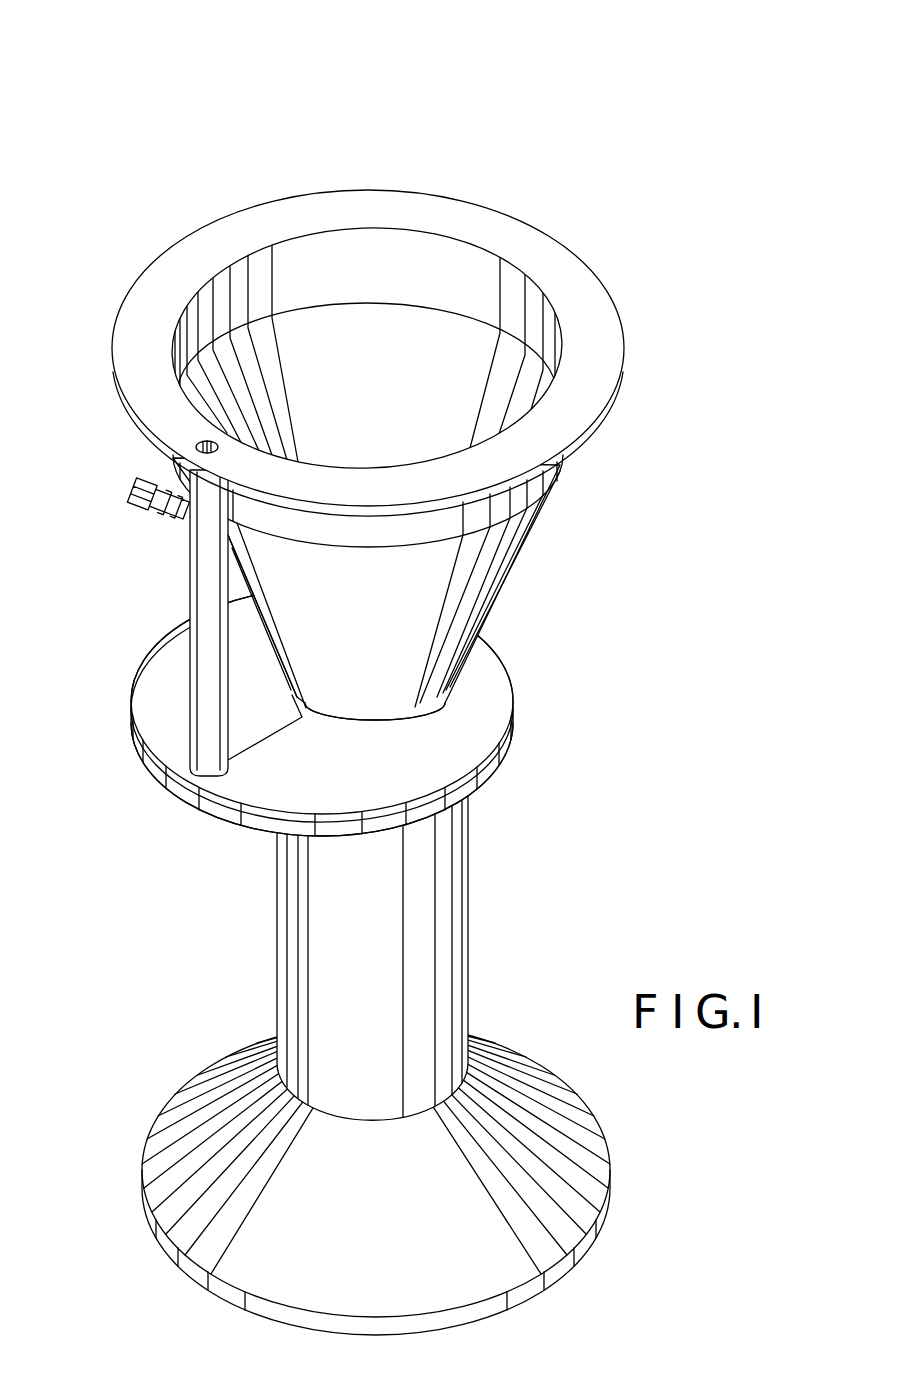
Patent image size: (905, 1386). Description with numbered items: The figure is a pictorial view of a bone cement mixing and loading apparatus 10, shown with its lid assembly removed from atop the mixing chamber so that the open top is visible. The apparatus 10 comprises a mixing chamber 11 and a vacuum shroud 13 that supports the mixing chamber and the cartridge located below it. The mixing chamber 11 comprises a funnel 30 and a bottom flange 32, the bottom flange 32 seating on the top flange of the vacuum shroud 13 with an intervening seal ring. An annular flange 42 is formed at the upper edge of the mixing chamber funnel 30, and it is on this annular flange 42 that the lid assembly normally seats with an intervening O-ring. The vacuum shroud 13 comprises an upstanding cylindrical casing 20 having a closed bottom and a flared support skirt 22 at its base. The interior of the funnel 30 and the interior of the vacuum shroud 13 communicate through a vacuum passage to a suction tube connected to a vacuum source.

The bone cement mixing and loading apparatus 10 is at (370, 667).
The mixing chamber 11 is at (370, 480).
The annular flange 42 is at (602, 320).
The funnel 30 is at (535, 547).
The bottom flange 32 is at (170, 697).
The vacuum shroud 13 is at (351, 961).
The upstanding cylindrical casing 20 is at (293, 978).
The flared support skirt 22 is at (190, 1100).